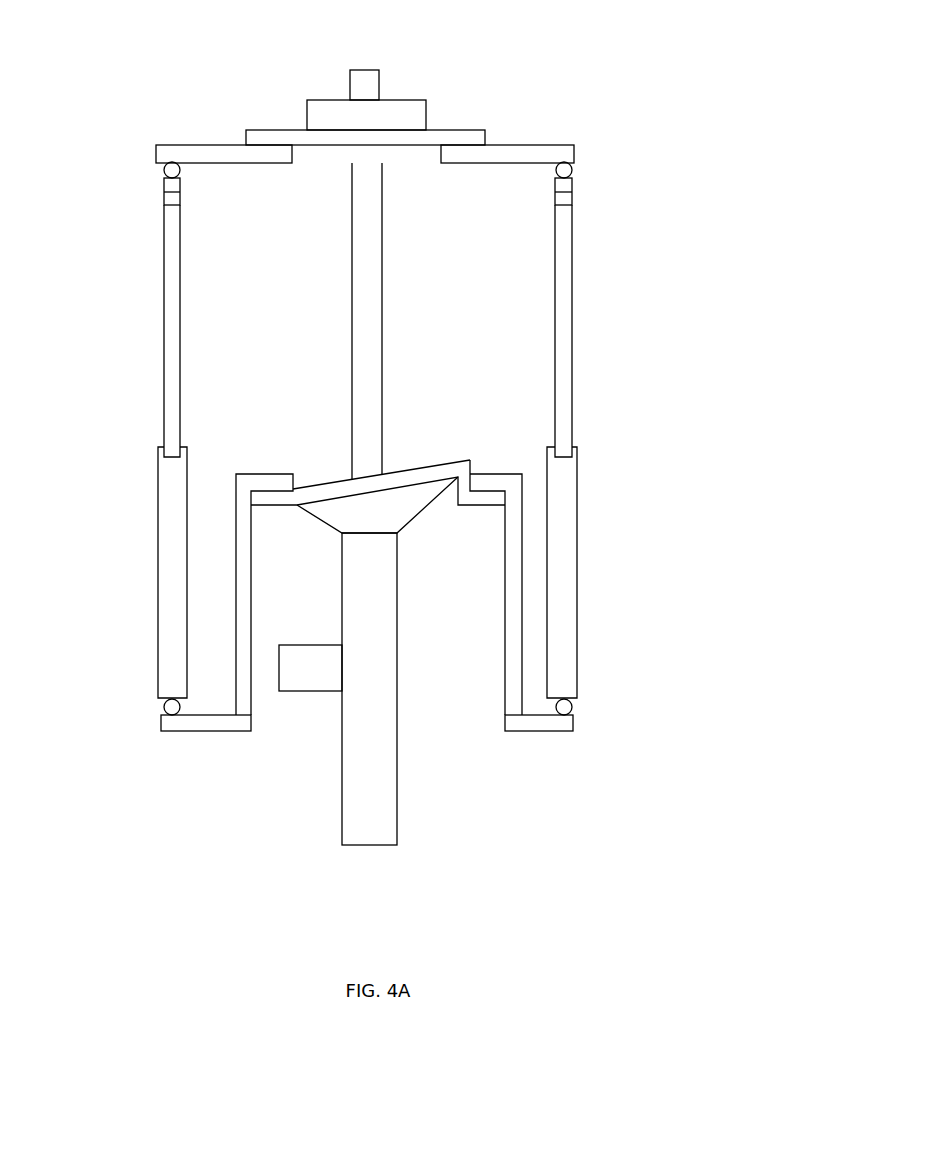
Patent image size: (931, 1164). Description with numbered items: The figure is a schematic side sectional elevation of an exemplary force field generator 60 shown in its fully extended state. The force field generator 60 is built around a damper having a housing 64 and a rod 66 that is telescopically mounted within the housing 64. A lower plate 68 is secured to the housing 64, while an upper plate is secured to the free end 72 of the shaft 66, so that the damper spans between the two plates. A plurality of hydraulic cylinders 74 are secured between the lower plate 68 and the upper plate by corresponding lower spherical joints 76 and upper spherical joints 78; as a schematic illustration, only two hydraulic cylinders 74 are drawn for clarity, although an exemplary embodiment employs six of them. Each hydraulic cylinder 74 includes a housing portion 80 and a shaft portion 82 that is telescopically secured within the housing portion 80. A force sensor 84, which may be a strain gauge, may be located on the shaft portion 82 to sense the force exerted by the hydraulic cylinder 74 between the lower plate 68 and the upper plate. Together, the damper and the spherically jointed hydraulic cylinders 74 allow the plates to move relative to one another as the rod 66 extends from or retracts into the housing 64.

The force field generator 60 is at (658, 217).
The housing 64 is at (397, 763).
The rod 66 is at (382, 365).
The lower plate 68 is at (238, 733).
The free end 72 is at (385, 85).
The hydraulic cylinder 74 is at (157, 455).
The lower spherical joint 76 is at (165, 705).
The upper spherical joint 78 is at (162, 170).
The housing portion 80 is at (157, 498).
The shaft portion 82 is at (165, 303).
The force sensor 84 is at (162, 202).